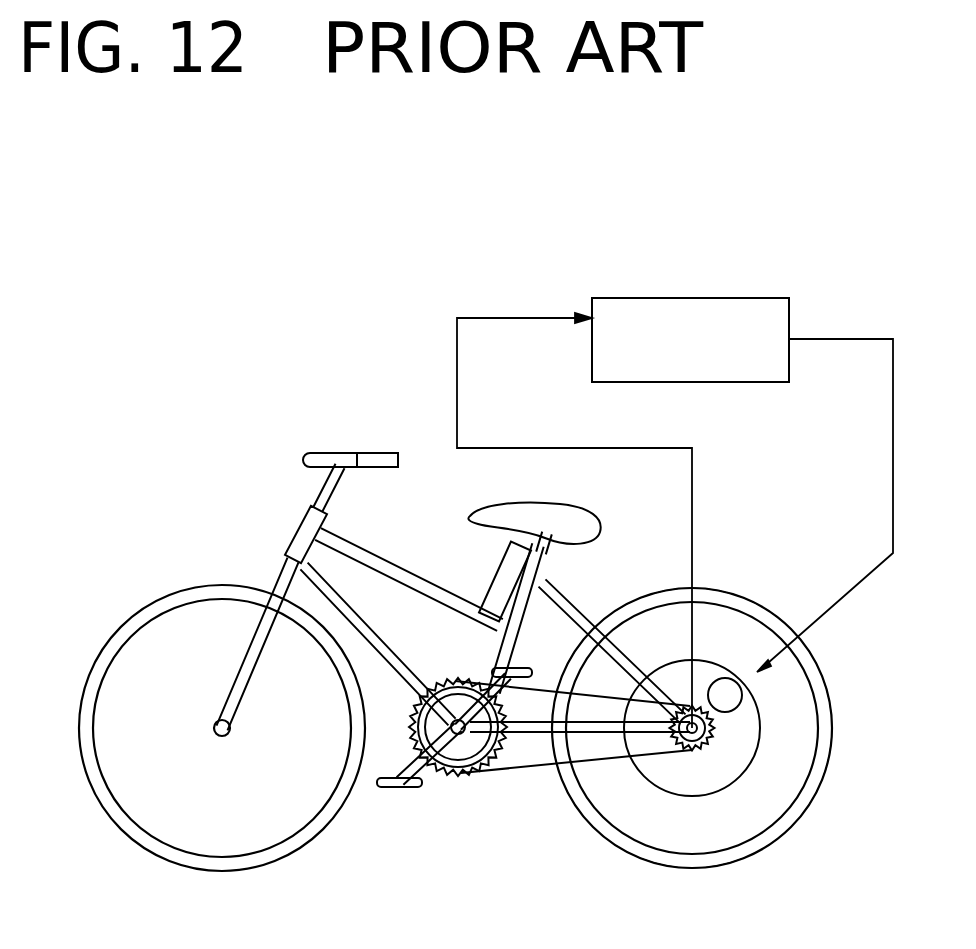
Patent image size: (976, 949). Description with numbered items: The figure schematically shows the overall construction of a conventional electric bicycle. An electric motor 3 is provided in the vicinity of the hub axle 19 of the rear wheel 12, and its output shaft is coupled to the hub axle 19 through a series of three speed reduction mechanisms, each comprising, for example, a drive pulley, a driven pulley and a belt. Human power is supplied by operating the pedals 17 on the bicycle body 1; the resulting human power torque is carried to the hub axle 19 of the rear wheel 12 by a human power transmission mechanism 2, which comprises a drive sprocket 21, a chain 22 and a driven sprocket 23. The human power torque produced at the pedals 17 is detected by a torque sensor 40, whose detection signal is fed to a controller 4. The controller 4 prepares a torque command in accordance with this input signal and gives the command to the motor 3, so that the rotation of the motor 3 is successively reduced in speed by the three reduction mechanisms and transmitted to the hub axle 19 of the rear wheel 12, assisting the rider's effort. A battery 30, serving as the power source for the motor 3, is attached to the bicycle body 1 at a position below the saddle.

The bicycle body 1 is at (335, 452).
The human power transmission mechanism 2 is at (603, 772).
The electric motor 3 is at (742, 713).
The controller 4 is at (688, 298).
The rear wheel 12 is at (822, 675).
The pedals 17 is at (396, 789).
The hub axle 19 is at (712, 748).
The drive sprocket 21 is at (455, 778).
The chain 22 is at (540, 768).
The driven sprocket 23 is at (687, 750).
The battery 30 is at (507, 578).
The torque sensor 40 is at (725, 740).